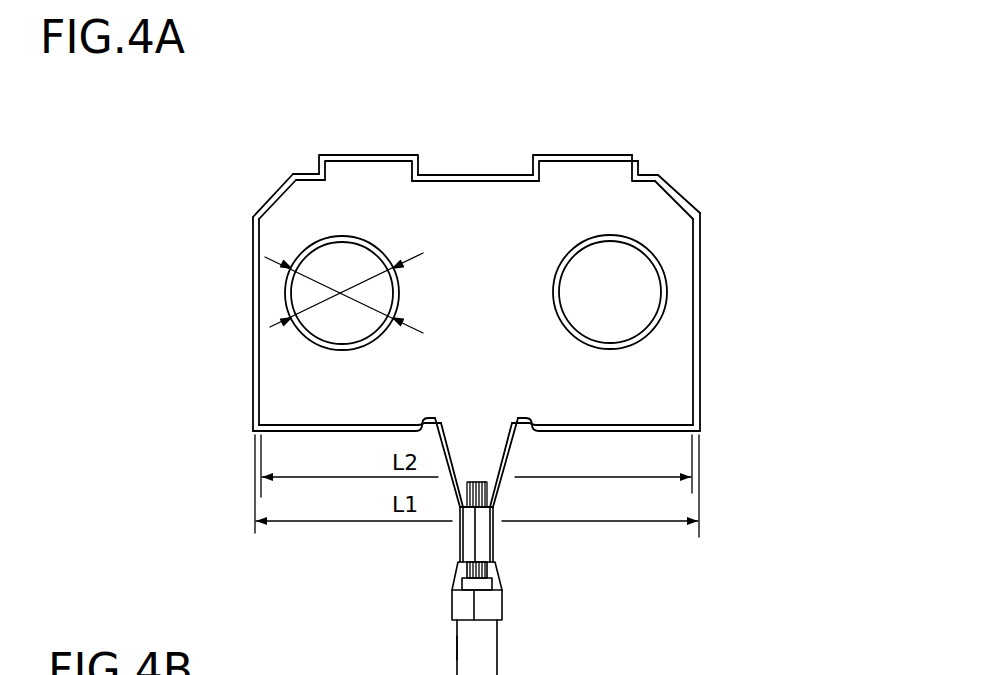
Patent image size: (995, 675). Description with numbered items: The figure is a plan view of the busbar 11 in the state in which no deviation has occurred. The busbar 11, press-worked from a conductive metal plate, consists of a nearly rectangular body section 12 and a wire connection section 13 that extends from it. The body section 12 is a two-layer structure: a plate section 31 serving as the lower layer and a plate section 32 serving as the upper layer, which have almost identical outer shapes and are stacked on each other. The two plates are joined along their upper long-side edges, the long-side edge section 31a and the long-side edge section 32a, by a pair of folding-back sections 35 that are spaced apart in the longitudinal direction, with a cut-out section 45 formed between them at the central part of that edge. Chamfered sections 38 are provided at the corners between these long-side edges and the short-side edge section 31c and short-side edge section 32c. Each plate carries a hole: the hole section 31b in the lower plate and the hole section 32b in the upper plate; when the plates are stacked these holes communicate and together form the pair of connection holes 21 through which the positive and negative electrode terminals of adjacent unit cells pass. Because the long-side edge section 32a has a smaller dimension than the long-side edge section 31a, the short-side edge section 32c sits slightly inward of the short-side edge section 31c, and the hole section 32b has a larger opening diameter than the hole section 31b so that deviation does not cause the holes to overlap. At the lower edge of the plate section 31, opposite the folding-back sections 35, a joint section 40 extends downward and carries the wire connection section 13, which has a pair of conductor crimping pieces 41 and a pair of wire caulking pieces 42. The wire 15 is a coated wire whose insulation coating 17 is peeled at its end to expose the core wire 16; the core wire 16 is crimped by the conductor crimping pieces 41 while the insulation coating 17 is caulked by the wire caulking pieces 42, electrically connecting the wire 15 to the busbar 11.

The busbar 11 is at (214, 152).
The body section 12 is at (709, 437).
The wire connection section 13 is at (513, 574).
The wire 15 is at (501, 646).
The core wire 16 is at (492, 488).
The insulation coating 17 is at (456, 648).
The connection holes 21 is at (333, 266).
The plate section 31 is at (313, 398).
The long-side edge section 31a is at (650, 172).
The hole section 31b is at (340, 343).
The short-side edge section 31c is at (252, 419).
The plate section 32 is at (562, 192).
The long-side edge section 32a is at (638, 177).
The hole section 32b is at (350, 250).
The short-side edge section 32c is at (253, 357).
The folding-back sections 35 is at (332, 155).
The chamfered sections 38 is at (259, 208).
The joint section 40 is at (498, 452).
The conductor crimping pieces 41 is at (487, 543).
The wire caulking pieces 42 is at (452, 600).
The cut-out section 45 is at (440, 177).